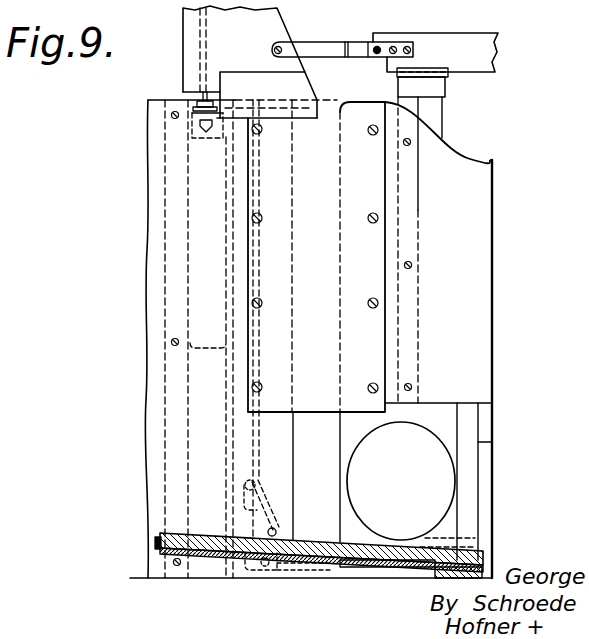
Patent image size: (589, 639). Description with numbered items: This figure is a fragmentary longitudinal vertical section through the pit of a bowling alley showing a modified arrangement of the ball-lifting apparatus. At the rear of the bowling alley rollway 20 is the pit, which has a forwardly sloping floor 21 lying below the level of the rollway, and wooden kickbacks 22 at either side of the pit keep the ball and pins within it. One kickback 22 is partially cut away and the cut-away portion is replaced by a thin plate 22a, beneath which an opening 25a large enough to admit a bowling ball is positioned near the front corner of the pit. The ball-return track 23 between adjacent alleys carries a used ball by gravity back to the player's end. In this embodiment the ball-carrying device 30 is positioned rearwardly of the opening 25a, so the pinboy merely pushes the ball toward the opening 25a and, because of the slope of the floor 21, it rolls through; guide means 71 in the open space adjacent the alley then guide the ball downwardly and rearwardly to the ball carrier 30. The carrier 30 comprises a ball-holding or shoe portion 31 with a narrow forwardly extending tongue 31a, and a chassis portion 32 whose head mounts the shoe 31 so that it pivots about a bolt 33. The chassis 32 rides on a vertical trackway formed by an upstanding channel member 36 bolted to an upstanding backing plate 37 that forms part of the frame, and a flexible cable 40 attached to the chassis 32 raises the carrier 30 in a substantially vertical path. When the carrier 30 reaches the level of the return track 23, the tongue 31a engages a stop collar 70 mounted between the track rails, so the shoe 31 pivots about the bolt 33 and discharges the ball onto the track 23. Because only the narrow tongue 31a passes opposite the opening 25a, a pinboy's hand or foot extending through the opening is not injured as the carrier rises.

The bowling alley rollway 20 is at (492, 403).
The forwardly sloping floor 21 is at (210, 535).
The kickbacks 22 is at (472, 178).
The thin plate 22a is at (323, 110).
The ball-return track 23 is at (483, 47).
The opening 25a is at (438, 441).
The ball-carrying device 30 is at (270, 520).
The ball-holding or shoe portion 31 is at (277, 531).
The tongue 31a is at (360, 565).
The chassis portion 32 is at (283, 574).
The bolt 33 is at (337, 566).
The upstanding channel member 36 is at (258, 476).
The upstanding backing plate 37 is at (233, 460).
The flexible cable 40 is at (253, 433).
The stop collar 70 is at (378, 55).
The guide means 71 is at (440, 536).